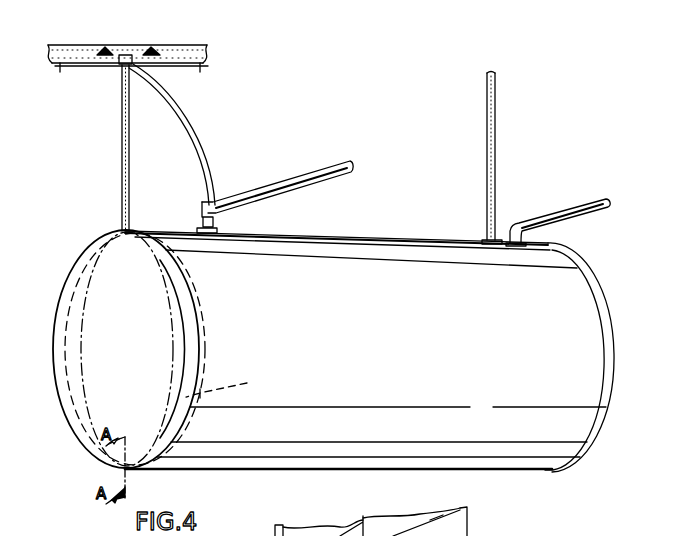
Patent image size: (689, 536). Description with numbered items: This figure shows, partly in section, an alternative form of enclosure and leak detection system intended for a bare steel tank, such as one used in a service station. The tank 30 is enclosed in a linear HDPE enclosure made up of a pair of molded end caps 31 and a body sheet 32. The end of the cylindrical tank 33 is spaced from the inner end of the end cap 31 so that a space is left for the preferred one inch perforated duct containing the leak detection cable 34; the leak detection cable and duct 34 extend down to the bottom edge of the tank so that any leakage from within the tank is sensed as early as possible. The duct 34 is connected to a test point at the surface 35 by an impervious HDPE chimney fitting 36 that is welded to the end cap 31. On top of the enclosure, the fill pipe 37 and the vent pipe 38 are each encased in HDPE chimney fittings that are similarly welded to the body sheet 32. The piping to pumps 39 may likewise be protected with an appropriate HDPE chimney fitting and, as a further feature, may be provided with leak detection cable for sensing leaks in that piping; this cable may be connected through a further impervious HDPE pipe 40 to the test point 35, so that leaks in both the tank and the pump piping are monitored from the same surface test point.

The tank 30 is at (392, 365).
The end cap 31 is at (62, 282).
The body sheet 32 is at (280, 233).
The end of the cylindrical tank 33 is at (224, 374).
The leak detection cable and duct 34 is at (172, 395).
The test point at the surface 35 is at (127, 52).
The chimney fitting 36 is at (122, 178).
The fill pipe 37 is at (495, 182).
The vent pipe 38 is at (577, 208).
The piping to pumps 39 is at (277, 183).
The impervious HDPE pipe 40 is at (207, 158).